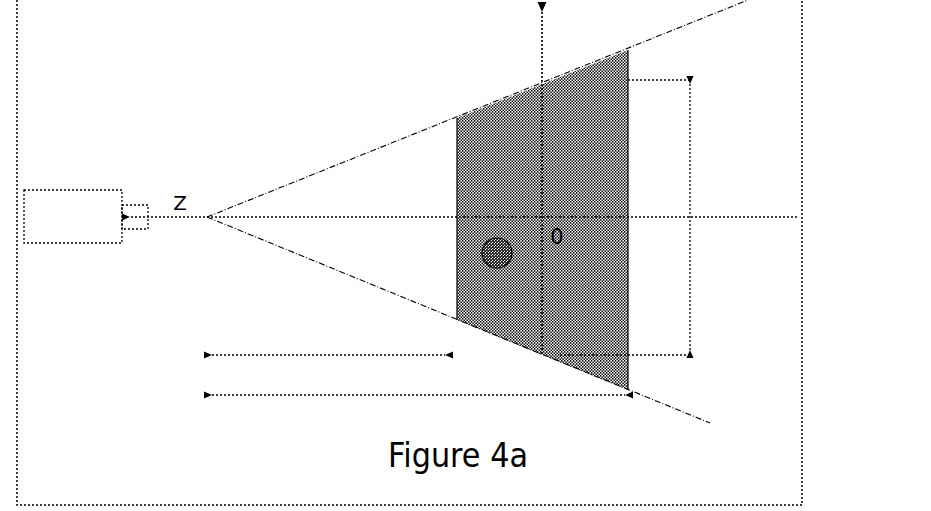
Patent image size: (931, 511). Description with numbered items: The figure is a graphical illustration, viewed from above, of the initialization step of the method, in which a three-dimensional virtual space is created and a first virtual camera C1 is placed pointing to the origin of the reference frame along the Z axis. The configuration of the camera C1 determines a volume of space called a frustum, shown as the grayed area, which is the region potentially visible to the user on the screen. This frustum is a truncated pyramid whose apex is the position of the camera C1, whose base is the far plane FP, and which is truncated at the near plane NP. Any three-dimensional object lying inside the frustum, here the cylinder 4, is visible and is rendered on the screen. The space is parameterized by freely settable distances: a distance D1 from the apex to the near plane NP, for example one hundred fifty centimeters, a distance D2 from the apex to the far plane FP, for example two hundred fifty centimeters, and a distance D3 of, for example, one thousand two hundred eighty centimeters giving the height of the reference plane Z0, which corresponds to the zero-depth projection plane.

The cylinder 4 is at (497, 268).
The first virtual camera C1 is at (86, 216).
The near plane NP is at (473, 219).
The far plane FP is at (645, 220).
The reference plane Z0 is at (558, 183).
The distance between the apex of the pyramid and the near plane D1 is at (328, 339).
The distance between the apex and the far plane D2 is at (418, 380).
The height of the reference plane D3 is at (645, 217).